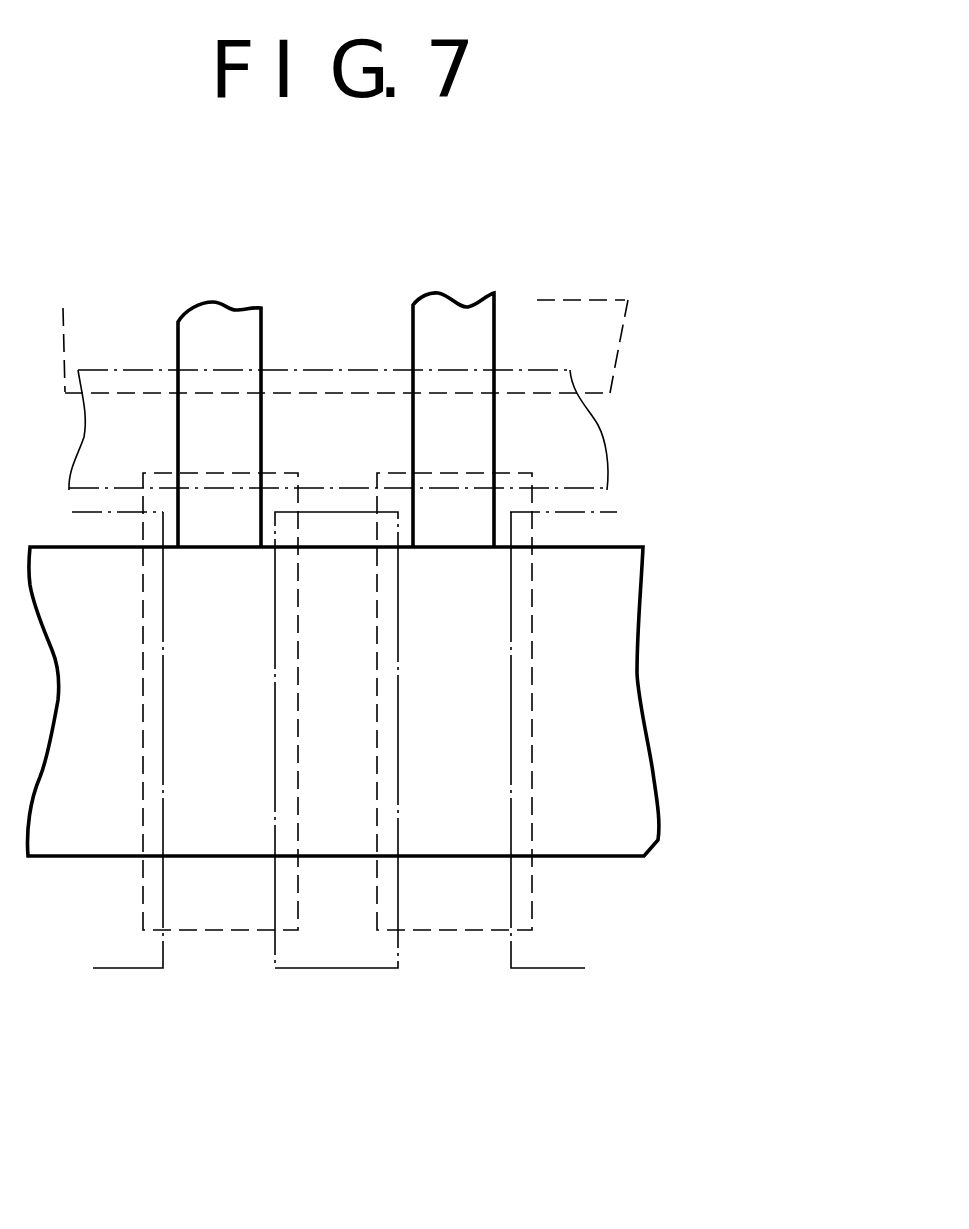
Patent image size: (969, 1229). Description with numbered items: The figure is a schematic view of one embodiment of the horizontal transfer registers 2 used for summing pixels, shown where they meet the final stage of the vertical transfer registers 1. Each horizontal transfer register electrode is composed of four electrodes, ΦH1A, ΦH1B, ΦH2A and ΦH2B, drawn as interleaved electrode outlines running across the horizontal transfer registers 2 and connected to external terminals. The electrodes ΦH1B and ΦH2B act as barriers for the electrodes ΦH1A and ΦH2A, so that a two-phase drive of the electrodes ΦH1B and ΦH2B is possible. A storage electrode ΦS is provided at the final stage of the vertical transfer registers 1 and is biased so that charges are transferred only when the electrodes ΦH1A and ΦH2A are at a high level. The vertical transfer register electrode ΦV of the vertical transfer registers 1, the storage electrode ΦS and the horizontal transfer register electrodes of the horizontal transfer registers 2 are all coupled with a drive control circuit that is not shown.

The vertical transfer registers 1 is at (453, 294).
The horizontal transfer registers 2 is at (643, 700).